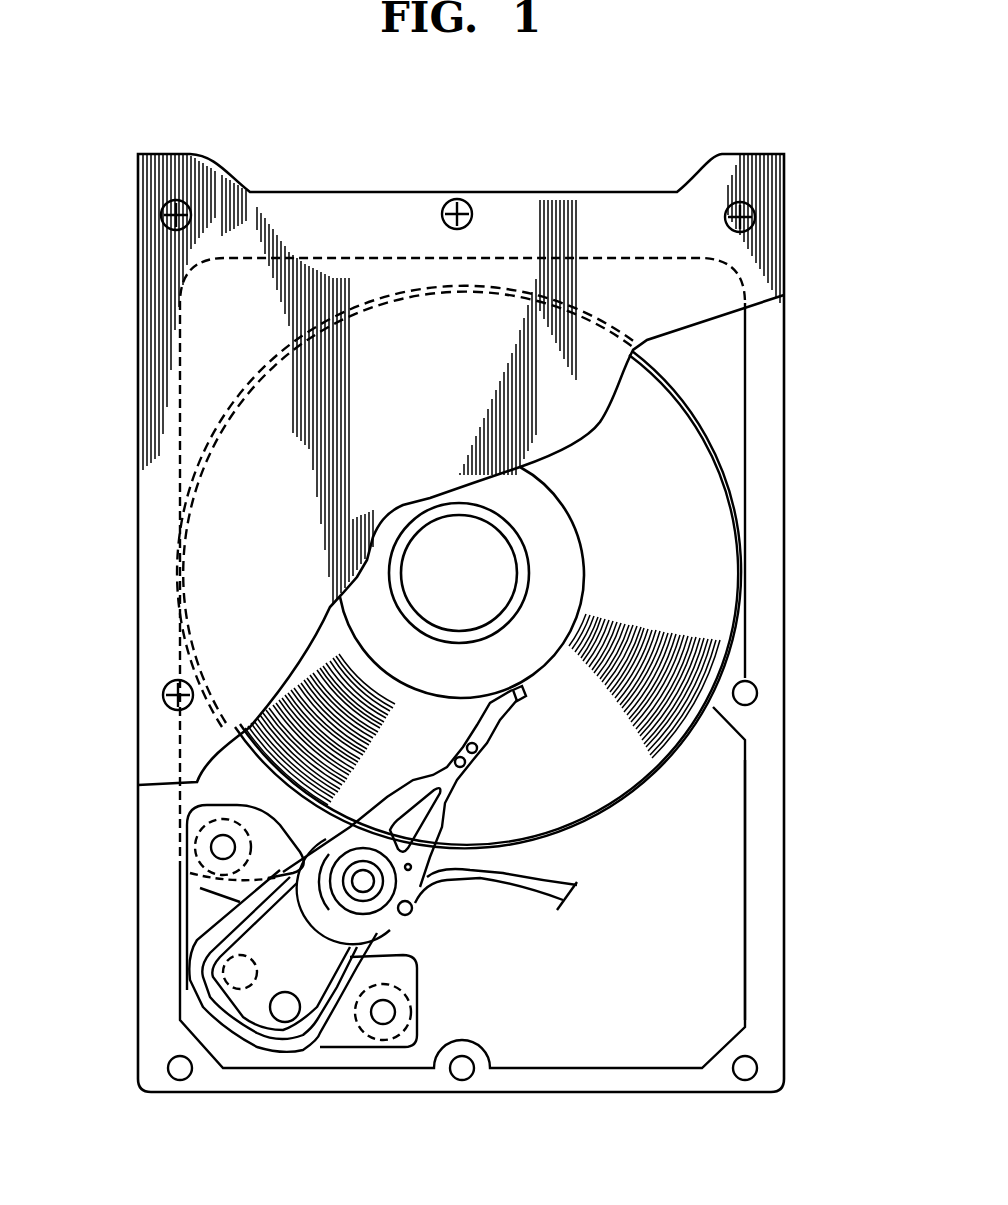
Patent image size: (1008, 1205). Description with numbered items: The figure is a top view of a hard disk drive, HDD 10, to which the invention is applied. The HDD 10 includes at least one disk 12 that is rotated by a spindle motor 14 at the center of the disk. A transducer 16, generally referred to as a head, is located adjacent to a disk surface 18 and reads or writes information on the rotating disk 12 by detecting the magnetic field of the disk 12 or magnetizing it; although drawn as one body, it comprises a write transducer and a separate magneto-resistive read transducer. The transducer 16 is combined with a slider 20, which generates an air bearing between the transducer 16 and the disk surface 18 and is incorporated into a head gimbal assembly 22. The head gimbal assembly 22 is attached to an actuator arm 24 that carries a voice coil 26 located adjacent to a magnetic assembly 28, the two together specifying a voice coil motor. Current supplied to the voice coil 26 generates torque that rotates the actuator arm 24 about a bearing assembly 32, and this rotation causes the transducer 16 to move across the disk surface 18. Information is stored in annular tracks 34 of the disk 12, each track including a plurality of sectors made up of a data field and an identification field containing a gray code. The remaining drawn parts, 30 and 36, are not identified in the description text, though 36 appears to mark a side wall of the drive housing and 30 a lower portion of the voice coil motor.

The HDD 10 is at (777, 130).
The disk 12 is at (700, 512).
The spindle motor 14 is at (437, 552).
The transducer 16 is at (521, 697).
The disk surface 18 is at (619, 548).
The slider 20 is at (495, 740).
The head gimbal assembly 22 is at (458, 815).
The actuator arm 24 is at (275, 885).
The voice coil 26 is at (210, 962).
The magnetic assembly 28 is at (233, 900).
The lower yoke 30 is at (333, 1027).
The bearing assembly 32 is at (373, 895).
The annular tracks 34 is at (327, 690).
The base side wall 36 is at (757, 908).